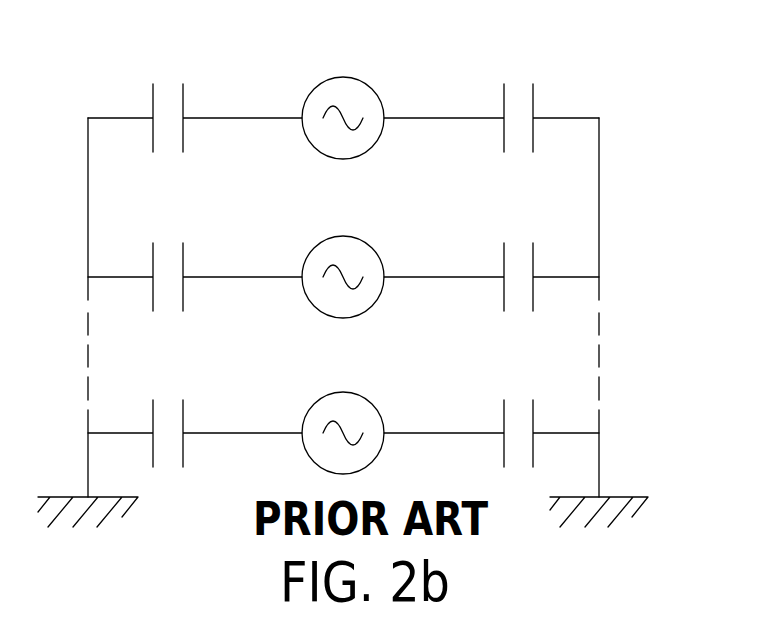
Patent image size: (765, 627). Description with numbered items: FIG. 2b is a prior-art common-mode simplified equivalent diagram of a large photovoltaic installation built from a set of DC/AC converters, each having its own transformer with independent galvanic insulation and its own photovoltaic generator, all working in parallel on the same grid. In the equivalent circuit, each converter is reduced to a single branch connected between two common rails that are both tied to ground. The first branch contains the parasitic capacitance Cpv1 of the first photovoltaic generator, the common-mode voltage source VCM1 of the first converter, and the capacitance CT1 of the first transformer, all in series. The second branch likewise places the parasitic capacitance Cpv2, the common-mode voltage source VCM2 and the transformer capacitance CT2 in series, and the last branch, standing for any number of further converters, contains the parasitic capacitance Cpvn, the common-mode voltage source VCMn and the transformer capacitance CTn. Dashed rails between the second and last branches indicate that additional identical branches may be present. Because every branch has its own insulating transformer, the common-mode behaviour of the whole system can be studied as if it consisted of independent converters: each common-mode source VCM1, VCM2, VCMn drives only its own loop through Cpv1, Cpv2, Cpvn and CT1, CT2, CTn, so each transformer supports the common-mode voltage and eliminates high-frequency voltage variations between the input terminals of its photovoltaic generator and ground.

The parasitic capacitance of the first photovoltaic generator Cpv1 is at (195, 92).
The parasitic capacitance of the second photovoltaic generator Cpv2 is at (195, 249).
The parasitic capacitance of the n-th photovoltaic generator Cpvn is at (195, 407).
The common-mode voltage source of the first converter VCM1 is at (343, 95).
The common-mode voltage source of the second converter VCM2 is at (343, 252).
The common-mode voltage source of the n-th converter VCMn is at (343, 411).
The capacitance of the first transformer CT1 is at (491, 92).
The capacitance of the second transformer CT2 is at (491, 249).
The capacitance of the n-th transformer CTn is at (491, 407).